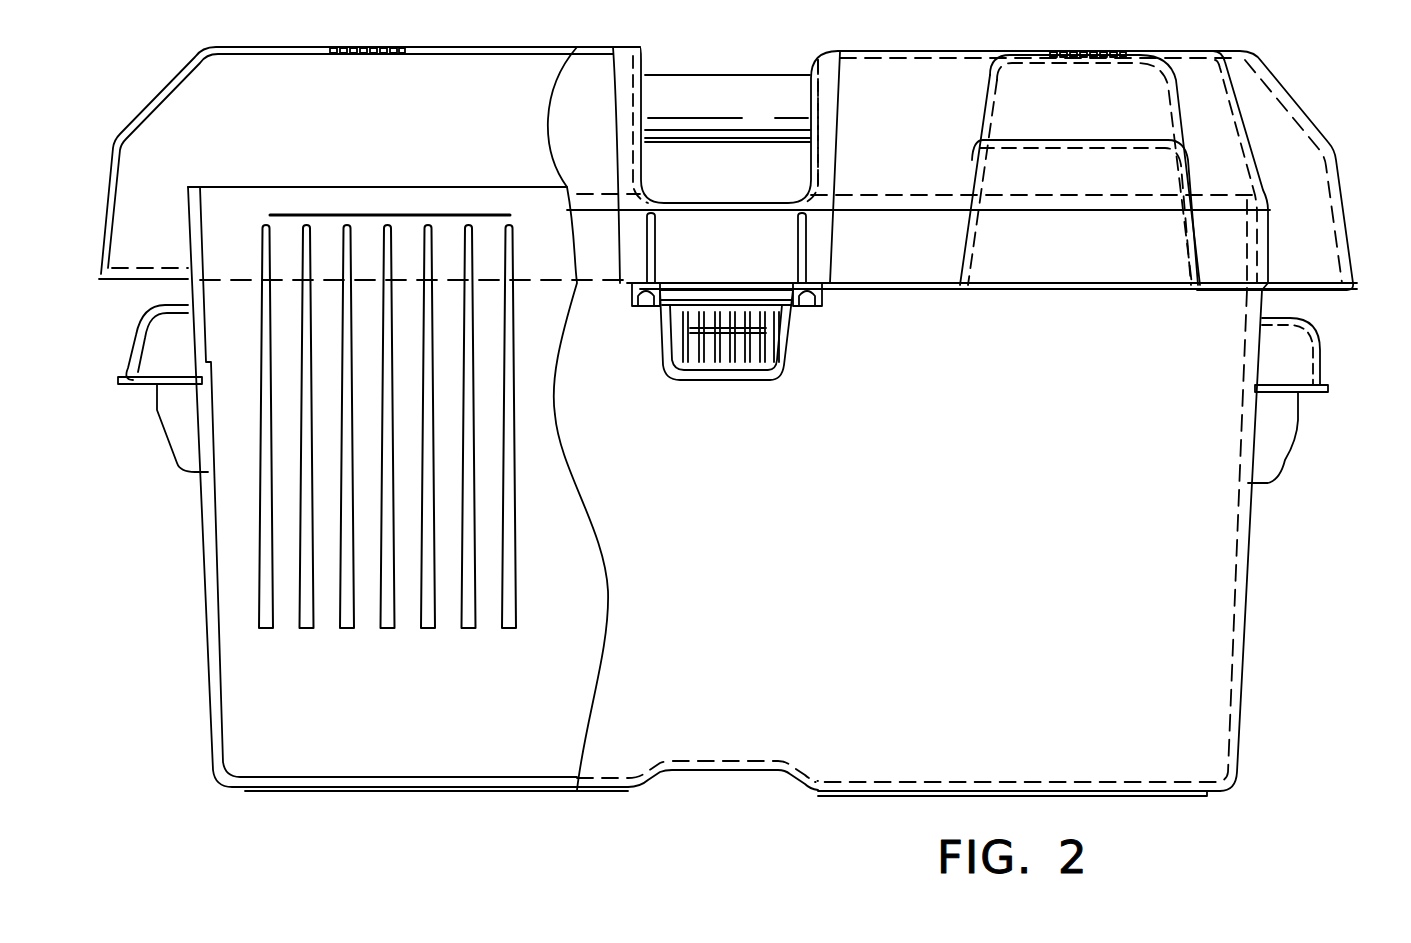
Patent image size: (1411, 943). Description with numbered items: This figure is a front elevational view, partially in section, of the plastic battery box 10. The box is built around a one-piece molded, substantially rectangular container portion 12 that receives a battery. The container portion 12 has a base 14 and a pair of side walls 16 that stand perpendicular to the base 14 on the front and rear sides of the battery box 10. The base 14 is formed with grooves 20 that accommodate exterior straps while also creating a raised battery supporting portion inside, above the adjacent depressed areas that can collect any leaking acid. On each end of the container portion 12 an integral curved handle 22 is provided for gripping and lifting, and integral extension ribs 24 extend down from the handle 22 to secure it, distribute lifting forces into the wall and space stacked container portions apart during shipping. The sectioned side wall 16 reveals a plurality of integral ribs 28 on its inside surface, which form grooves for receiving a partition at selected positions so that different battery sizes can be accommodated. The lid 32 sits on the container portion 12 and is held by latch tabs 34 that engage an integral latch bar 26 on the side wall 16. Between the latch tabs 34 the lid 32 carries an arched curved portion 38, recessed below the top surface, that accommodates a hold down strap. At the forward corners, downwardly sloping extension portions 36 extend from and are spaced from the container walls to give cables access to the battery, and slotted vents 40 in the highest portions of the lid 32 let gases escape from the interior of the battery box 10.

The battery box 10 is at (1392, 583).
The container portion 12 is at (191, 748).
The base 14 is at (500, 790).
The side walls 16 is at (745, 551).
The grooves 20 is at (705, 775).
The handle 22 is at (130, 343).
The extension ribs 24 is at (158, 440).
The latch bar 26 is at (635, 308).
The ribs 28 is at (267, 630).
The lid 32 is at (912, 125).
The latch tabs 34 is at (790, 348).
The extension portions 36 is at (360, 133).
The arched curved portion 38 is at (702, 176).
The slotted vents 40 is at (400, 50).